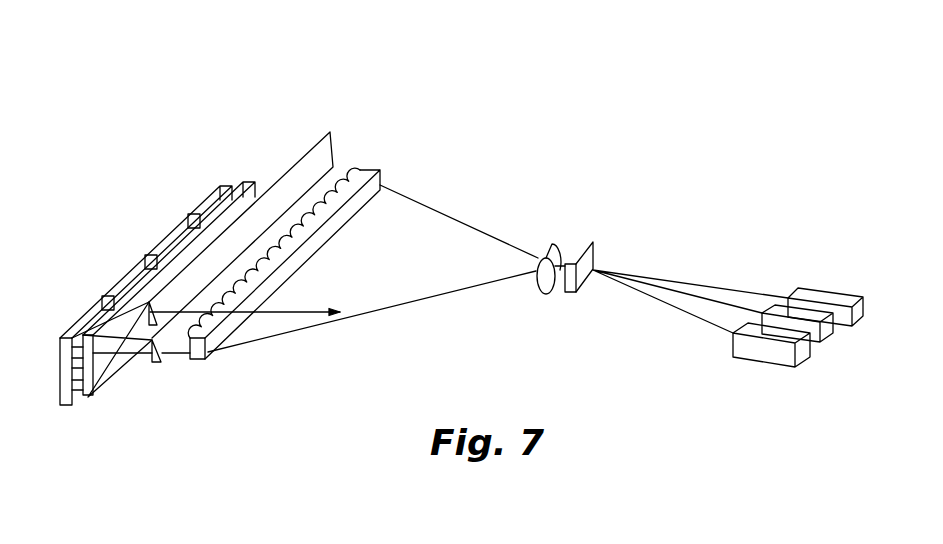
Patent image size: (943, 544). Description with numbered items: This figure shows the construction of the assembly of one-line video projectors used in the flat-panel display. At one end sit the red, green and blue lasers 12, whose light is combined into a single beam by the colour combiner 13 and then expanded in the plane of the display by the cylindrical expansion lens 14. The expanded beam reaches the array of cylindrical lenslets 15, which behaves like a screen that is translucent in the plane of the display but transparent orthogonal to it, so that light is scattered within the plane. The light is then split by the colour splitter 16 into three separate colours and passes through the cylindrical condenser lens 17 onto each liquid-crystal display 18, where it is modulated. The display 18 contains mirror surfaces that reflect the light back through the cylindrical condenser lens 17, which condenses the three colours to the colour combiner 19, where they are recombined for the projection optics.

The red, green and blue lasers 12 is at (822, 281).
The colour combiner 13 is at (588, 243).
The cylindrical expansion lens 14 is at (547, 244).
The array of cylindrical lenslets 15 is at (386, 176).
The colour splitter 16 is at (154, 366).
The cylindrical condenser lens 17 is at (90, 401).
The liquid-crystal display 18 is at (82, 315).
The colour combiner 19 is at (328, 127).